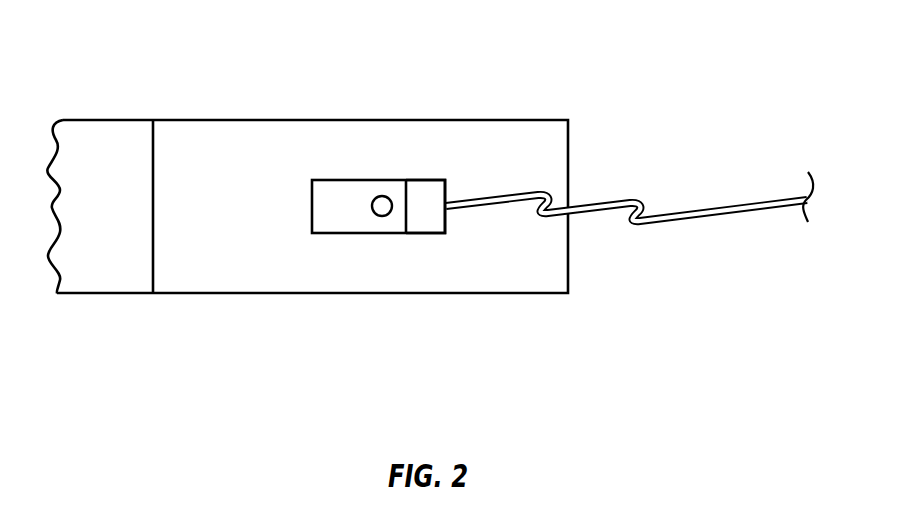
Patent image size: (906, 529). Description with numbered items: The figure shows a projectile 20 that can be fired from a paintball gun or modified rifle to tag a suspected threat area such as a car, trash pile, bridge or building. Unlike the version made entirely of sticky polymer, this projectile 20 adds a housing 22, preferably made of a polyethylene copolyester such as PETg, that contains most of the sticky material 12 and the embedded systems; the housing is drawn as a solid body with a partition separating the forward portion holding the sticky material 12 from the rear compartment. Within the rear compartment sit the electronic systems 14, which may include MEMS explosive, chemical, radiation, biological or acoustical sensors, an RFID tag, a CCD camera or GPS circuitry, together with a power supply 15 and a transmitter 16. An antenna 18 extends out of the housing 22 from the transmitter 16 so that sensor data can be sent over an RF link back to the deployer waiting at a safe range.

The projectile 20 is at (177, 63).
The sticky material 12 is at (190, 135).
The housing 22 is at (178, 295).
The electronic systems 14 is at (342, 178).
The transmitter 16 is at (423, 178).
The power supply 15 is at (382, 216).
The antenna 18 is at (712, 213).